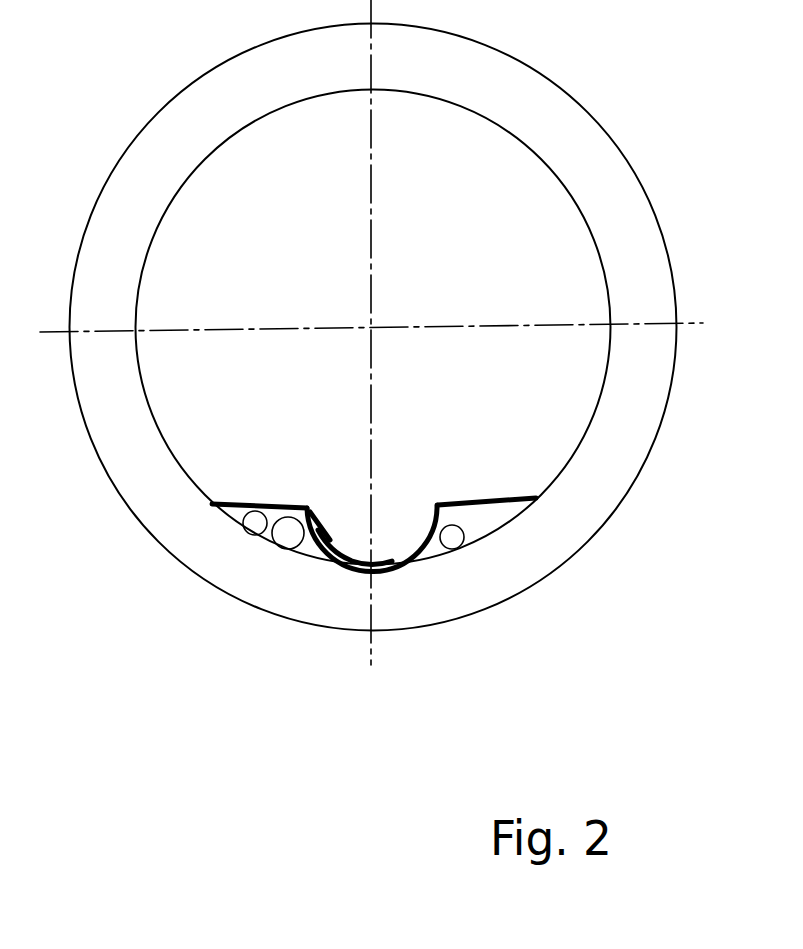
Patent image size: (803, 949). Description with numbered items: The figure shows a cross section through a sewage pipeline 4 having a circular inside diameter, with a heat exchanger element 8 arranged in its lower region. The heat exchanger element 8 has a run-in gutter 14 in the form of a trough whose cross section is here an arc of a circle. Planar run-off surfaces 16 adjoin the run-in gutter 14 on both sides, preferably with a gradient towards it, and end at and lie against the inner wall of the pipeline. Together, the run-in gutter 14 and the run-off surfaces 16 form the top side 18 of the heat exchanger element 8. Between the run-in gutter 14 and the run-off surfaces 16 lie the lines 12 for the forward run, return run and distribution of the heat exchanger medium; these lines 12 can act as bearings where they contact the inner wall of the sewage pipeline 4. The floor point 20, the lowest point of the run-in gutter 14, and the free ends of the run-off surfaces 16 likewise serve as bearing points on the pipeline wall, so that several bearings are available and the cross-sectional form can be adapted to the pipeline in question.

The sewage pipeline 4 is at (632, 432).
The heat exchanger element 8 is at (389, 512).
The lines 12 is at (287, 535).
The run-in gutter 14 is at (323, 543).
The planar run-off surfaces 16 is at (262, 505).
The top side 18 is at (324, 518).
The floor point 20 is at (375, 565).